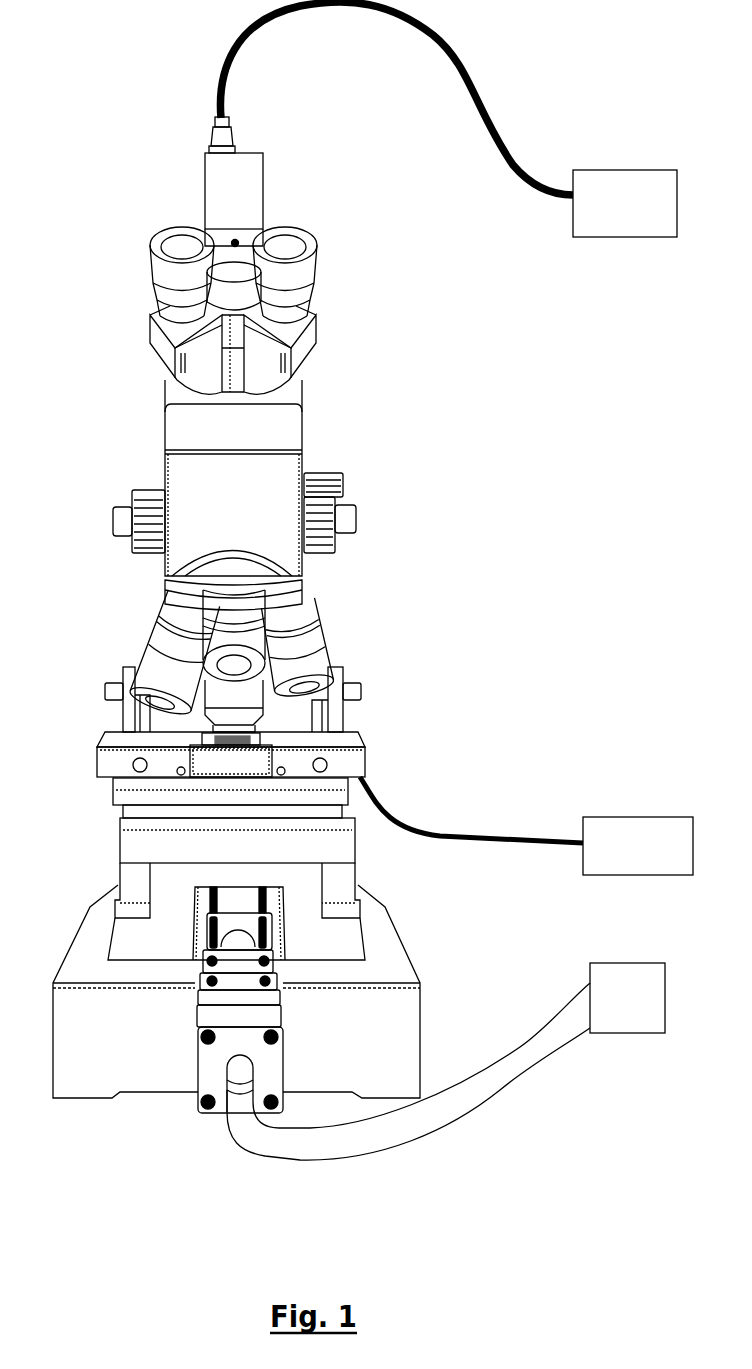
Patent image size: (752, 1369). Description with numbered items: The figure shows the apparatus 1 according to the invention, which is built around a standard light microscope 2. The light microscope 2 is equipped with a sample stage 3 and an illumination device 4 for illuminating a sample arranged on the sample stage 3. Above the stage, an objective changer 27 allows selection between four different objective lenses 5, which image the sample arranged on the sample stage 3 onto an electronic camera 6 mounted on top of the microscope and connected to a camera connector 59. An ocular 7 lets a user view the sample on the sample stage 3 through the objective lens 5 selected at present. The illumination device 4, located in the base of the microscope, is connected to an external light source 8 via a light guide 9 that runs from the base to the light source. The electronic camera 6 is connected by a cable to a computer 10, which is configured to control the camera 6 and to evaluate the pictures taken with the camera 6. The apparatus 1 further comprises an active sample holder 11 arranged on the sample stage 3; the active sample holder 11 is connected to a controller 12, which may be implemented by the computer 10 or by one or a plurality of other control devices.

The apparatus 1 is at (403, 270).
The light microscope 2 is at (314, 452).
The sample stage 3 is at (112, 810).
The illumination device 4 is at (193, 1119).
The objective lenses 5 is at (247, 637).
The electronic camera 6 is at (265, 179).
The ocular 7 is at (330, 252).
The external light source 8 is at (646, 963).
The light guide 9 is at (470, 1095).
The computer 10 is at (655, 170).
The active sample holder 11 is at (92, 734).
The controller 12 is at (655, 817).
The objective changer 27 is at (342, 622).
The camera connector 59 is at (238, 242).